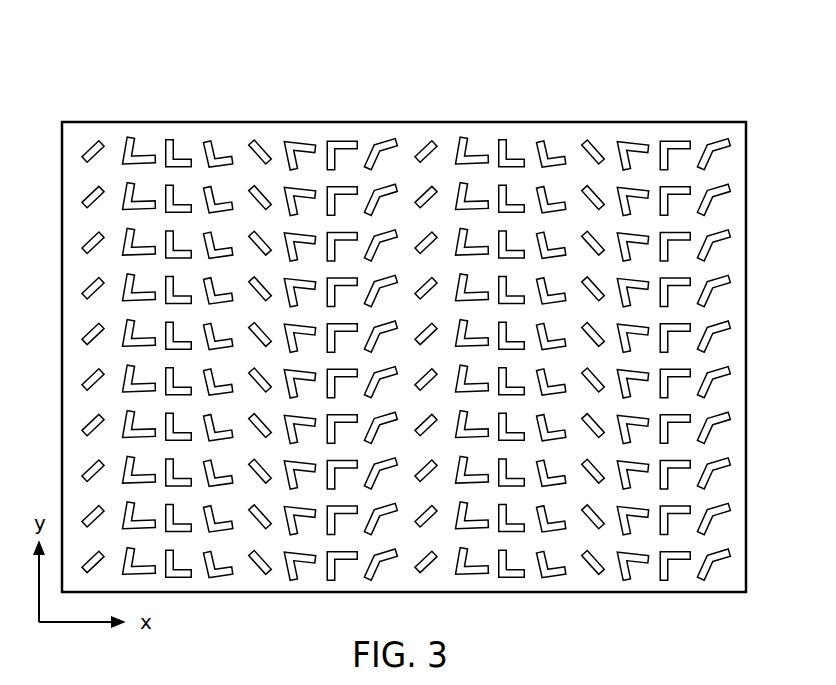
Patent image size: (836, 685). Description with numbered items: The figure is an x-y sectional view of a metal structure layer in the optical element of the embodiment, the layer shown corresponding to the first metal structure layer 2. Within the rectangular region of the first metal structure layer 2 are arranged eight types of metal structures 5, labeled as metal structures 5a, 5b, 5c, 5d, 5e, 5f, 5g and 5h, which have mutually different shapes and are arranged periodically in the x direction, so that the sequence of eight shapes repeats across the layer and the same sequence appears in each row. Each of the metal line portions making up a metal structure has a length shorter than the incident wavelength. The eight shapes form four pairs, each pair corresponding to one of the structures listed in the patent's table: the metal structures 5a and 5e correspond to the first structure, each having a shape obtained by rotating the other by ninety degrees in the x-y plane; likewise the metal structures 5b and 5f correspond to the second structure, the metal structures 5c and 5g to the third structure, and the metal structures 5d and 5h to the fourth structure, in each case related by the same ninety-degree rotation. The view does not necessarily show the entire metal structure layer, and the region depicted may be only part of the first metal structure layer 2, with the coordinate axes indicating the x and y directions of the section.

The first metal structure layer 2 is at (747, 176).
The metal structures 5 is at (405, 76).
The metal structure 5a is at (93, 138).
The metal structure 5b is at (131, 136).
The metal structure 5c is at (168, 138).
The metal structure 5d is at (207, 139).
The metal structure 5e is at (250, 139).
The metal structure 5f is at (289, 143).
The metal structure 5g is at (331, 142).
The metal structure 5h is at (380, 143).